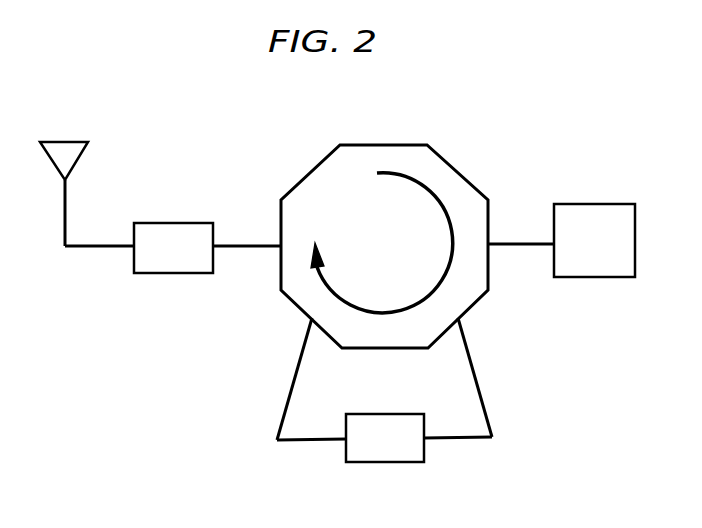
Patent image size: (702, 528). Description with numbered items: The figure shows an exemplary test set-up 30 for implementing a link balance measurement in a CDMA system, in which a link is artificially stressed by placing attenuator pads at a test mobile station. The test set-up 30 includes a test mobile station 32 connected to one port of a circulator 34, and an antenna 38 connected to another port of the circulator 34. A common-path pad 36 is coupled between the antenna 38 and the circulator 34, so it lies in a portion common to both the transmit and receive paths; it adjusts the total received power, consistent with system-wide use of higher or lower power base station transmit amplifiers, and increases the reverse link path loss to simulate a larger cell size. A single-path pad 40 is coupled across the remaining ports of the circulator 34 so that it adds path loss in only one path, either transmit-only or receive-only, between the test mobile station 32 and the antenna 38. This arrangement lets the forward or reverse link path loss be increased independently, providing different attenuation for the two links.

The test set-up 30 is at (528, 76).
The test mobile station 32 is at (612, 278).
The circulator 34 is at (300, 182).
The common-path pad 36 is at (163, 274).
The antenna 38 is at (83, 154).
The single-path pad 40 is at (402, 463).